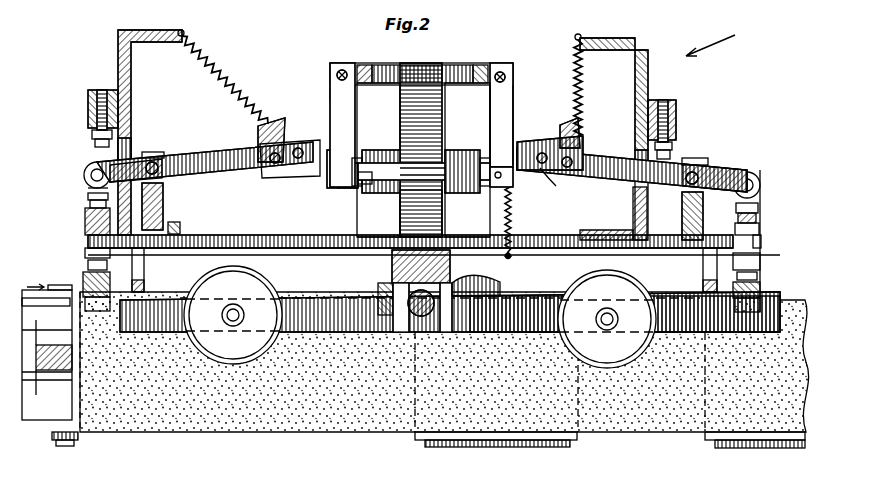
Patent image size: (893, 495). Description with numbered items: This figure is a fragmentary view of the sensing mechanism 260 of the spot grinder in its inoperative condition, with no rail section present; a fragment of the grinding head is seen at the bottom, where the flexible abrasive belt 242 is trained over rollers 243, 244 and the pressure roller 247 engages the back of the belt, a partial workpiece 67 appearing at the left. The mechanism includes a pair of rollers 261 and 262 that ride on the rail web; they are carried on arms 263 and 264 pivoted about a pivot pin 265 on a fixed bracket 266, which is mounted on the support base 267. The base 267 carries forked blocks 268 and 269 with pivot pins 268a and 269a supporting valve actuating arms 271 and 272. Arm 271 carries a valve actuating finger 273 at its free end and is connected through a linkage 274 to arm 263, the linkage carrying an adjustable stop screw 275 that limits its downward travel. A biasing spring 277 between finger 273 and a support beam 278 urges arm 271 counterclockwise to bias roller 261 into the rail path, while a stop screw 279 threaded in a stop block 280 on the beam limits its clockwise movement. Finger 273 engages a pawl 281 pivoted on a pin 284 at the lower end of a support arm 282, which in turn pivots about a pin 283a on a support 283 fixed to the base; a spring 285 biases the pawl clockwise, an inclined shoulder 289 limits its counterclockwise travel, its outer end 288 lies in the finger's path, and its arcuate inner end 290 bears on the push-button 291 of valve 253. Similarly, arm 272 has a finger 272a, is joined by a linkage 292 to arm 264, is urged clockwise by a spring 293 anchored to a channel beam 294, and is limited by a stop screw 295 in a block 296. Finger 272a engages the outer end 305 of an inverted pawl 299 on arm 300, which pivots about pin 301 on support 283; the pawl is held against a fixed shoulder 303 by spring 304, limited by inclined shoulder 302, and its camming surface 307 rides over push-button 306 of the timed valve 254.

The workpiece 67 is at (38, 425).
The flexible abrasive belt 242 is at (303, 432).
The roller 243 is at (712, 449).
The roller 244 is at (79, 438).
The roller 247 is at (418, 447).
The valve 253 is at (421, 213).
The timed valve 254 is at (450, 160).
The sensing mechanism 260 is at (711, 41).
The roller 261 is at (208, 270).
The roller 262 is at (622, 280).
The arm 263 is at (296, 298).
The arm 264 is at (540, 300).
The pivot pin 265 is at (392, 268).
The fixed bracket 266 is at (452, 266).
The support base 267 is at (268, 216).
The forked block 268 is at (165, 205).
The pivot pin 268a is at (155, 160).
The forked block 269 is at (704, 150).
The pivot pin 269a is at (700, 176).
The valve actuating arm 271 is at (236, 132).
The valve actuating arm 272 is at (608, 152).
The valve actuating finger 272a is at (572, 112).
The valve actuating finger 273 is at (292, 104).
The linkage 274 is at (75, 240).
The adjustable stop screw 275 is at (85, 188).
The biasing spring 277 is at (217, 62).
The support beam 278 is at (122, 30).
The adjustable stop screw 279 is at (92, 137).
The stop block 280 is at (110, 90).
The pawl 281 is at (330, 188).
The support arm 282 is at (330, 92).
The support 283 is at (418, 90).
The pin 283a is at (344, 68).
The pin 284 is at (343, 190).
The biasing spring 285 is at (333, 98).
The extreme outer end 288 is at (318, 170).
The inclined shoulder 289 is at (368, 148).
The inner end 290 is at (372, 186).
The push-button 291 is at (360, 162).
The linkage 292 is at (762, 215).
The biasing spring 293 is at (576, 96).
The channel beam 294 is at (650, 50).
The adjustable stop screw 295 is at (672, 148).
The block 296 is at (658, 100).
The pawl 299 is at (514, 200).
The arm 300 is at (514, 100).
The pivot pin 301 is at (501, 71).
The inclined shoulder 302 is at (550, 144).
The fixed shoulder 303 is at (500, 190).
The biasing spring 304 is at (512, 240).
The outer end 305 is at (532, 172).
The push-button 306 is at (482, 160).
The arcuate camming surface 307 is at (472, 148).